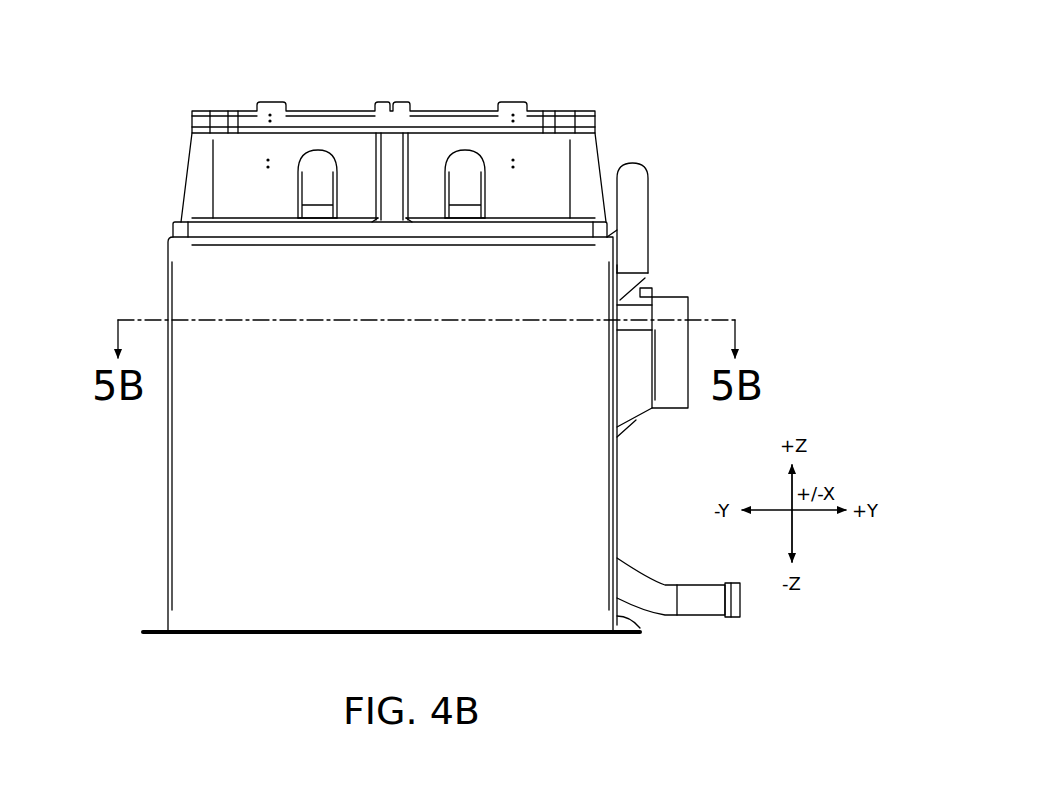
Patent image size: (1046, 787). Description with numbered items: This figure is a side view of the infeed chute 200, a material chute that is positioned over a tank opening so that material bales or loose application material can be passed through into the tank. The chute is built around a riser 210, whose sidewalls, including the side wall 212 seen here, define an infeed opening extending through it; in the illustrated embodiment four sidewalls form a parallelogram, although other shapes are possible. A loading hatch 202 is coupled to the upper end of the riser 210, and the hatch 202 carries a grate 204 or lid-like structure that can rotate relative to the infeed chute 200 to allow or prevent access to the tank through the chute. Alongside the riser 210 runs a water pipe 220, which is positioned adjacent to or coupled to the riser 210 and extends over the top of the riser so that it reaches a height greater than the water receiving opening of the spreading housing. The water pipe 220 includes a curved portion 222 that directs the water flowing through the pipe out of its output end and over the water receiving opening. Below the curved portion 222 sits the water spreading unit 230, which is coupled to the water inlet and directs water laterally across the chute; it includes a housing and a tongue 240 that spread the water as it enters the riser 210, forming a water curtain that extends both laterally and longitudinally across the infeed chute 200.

The infeed chute 200 is at (128, 90).
The hatch 202 is at (180, 156).
The grate 204 is at (571, 118).
The riser 210 is at (156, 517).
The side wall 212 is at (640, 625).
The water pipe 220 is at (712, 232).
The curved portion 222 is at (648, 177).
The water spreading unit 230 is at (690, 350).
The tongue 240 is at (652, 412).